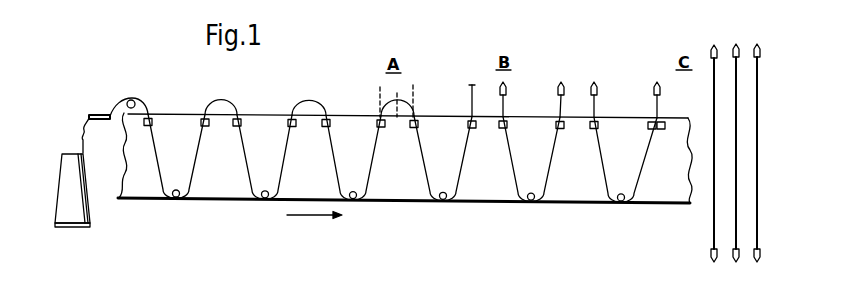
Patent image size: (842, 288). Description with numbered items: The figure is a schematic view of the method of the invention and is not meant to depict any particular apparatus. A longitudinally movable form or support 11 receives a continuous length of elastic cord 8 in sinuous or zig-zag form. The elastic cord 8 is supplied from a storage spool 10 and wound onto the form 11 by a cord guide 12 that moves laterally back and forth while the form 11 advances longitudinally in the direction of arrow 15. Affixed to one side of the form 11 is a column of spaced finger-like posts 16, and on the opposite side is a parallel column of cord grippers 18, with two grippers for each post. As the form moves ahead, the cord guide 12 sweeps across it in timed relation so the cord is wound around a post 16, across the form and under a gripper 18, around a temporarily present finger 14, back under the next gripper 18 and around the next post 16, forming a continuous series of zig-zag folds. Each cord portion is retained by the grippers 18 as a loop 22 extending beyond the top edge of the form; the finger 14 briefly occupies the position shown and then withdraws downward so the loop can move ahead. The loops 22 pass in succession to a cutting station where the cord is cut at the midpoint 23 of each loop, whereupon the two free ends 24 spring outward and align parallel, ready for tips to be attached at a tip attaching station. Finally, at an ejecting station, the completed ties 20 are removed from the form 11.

The elastic cord 8 is at (82, 136).
The storage spool 10 is at (57, 191).
The longitudinally movable form 11 is at (136, 193).
The cord guide 12 is at (100, 113).
The temporarily present finger 14 is at (136, 101).
The arrow 15 is at (304, 217).
The finger-like posts 16 is at (176, 199).
The cord grippers 18 is at (152, 122).
The completed ties 20 is at (733, 257).
The loop 22 is at (293, 102).
The midpoint 23 is at (394, 102).
The free ends 24 is at (471, 90).